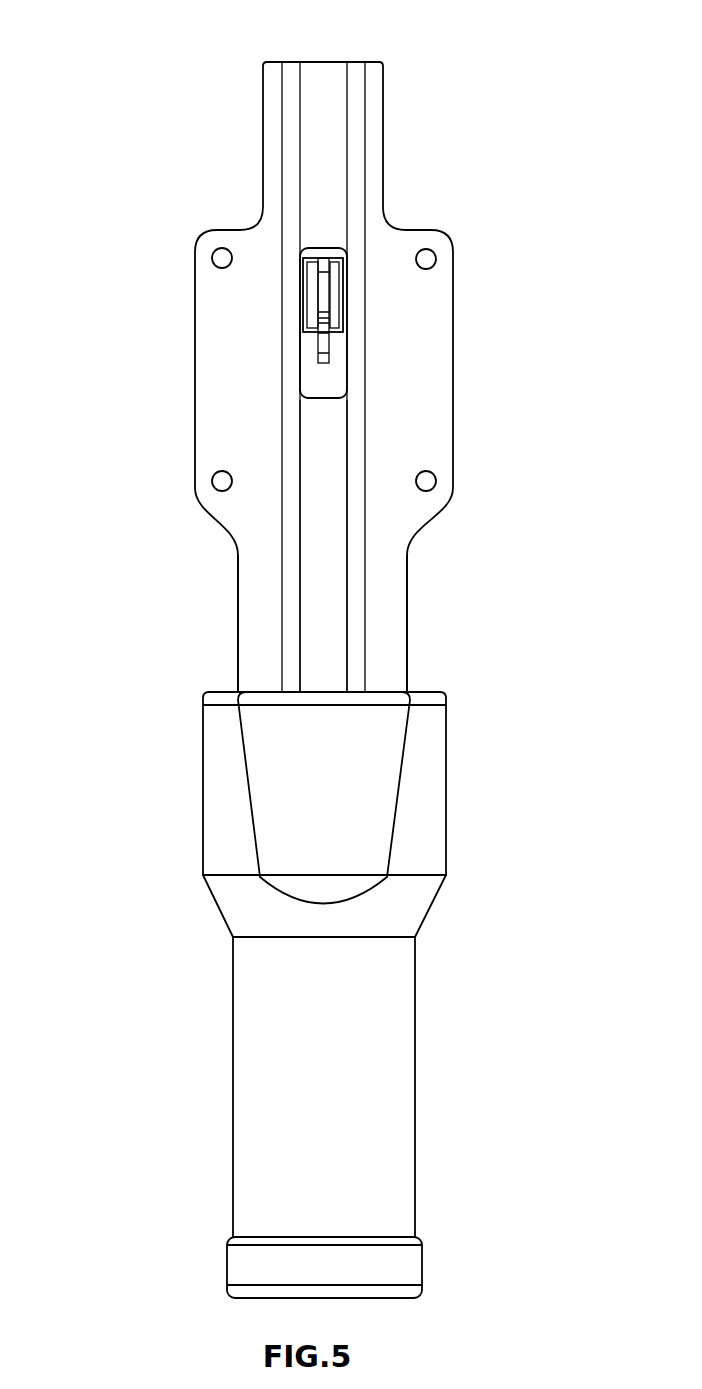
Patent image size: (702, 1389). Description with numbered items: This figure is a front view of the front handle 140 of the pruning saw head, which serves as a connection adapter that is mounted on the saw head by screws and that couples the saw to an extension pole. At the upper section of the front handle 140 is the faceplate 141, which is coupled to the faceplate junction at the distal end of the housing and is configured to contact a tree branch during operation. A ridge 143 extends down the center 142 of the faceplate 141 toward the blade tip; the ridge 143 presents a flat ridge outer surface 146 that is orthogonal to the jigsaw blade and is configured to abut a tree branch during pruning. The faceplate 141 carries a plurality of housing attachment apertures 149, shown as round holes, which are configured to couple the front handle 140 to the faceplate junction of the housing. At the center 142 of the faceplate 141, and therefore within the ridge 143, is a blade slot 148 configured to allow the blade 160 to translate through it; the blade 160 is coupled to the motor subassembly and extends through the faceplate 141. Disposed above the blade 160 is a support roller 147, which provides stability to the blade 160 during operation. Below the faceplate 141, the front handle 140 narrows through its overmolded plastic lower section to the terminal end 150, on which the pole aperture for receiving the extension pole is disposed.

The front handle 140 is at (138, 83).
The faceplate 141 is at (208, 343).
The center 142 is at (312, 485).
The ridge 143 is at (325, 71).
The ridge outer surface 146 is at (332, 620).
The support roller 147 is at (322, 272).
The blade slot 148 is at (330, 387).
The housing attachment apertures 149 is at (212, 257).
The terminal end 150 is at (422, 1262).
The blade 160 is at (322, 342).